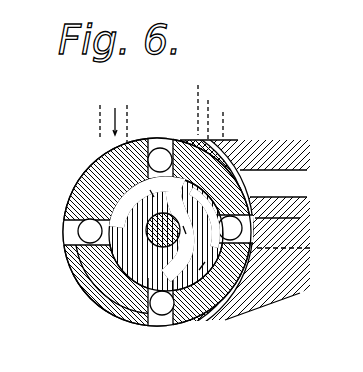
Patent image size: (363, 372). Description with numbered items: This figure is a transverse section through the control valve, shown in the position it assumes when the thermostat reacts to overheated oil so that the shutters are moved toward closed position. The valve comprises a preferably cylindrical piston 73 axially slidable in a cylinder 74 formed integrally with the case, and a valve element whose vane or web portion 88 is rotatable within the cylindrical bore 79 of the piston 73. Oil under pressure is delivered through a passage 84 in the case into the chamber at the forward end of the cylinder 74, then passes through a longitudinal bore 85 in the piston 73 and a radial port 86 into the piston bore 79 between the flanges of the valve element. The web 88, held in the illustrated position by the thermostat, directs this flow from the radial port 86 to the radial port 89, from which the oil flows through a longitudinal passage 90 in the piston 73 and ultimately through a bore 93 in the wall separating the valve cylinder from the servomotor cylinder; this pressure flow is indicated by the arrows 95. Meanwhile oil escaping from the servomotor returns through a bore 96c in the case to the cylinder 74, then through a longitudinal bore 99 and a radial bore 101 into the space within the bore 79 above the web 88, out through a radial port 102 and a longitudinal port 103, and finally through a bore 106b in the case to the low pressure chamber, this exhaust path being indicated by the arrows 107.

The piston 73 is at (240, 161).
The cylinder 74 is at (128, 318).
The cylindrical bore 79 is at (113, 199).
The passage 84 is at (283, 290).
The longitudinal bore 85 is at (297, 251).
The radial port 86 is at (300, 218).
The vane or web portion 88 is at (125, 276).
The radial port 89 is at (156, 329).
The longitudinal passage 90 is at (164, 318).
The bore 93 is at (298, 170).
The arrows 95 is at (246, 181).
The bore 96c is at (223, 112).
The longitudinal bore 99 is at (153, 140).
The radial bore 101 is at (194, 138).
The radial port 102 is at (128, 252).
The longitudinal port 103 is at (64, 237).
The bore 106b is at (100, 133).
The arrows 107 is at (228, 78).